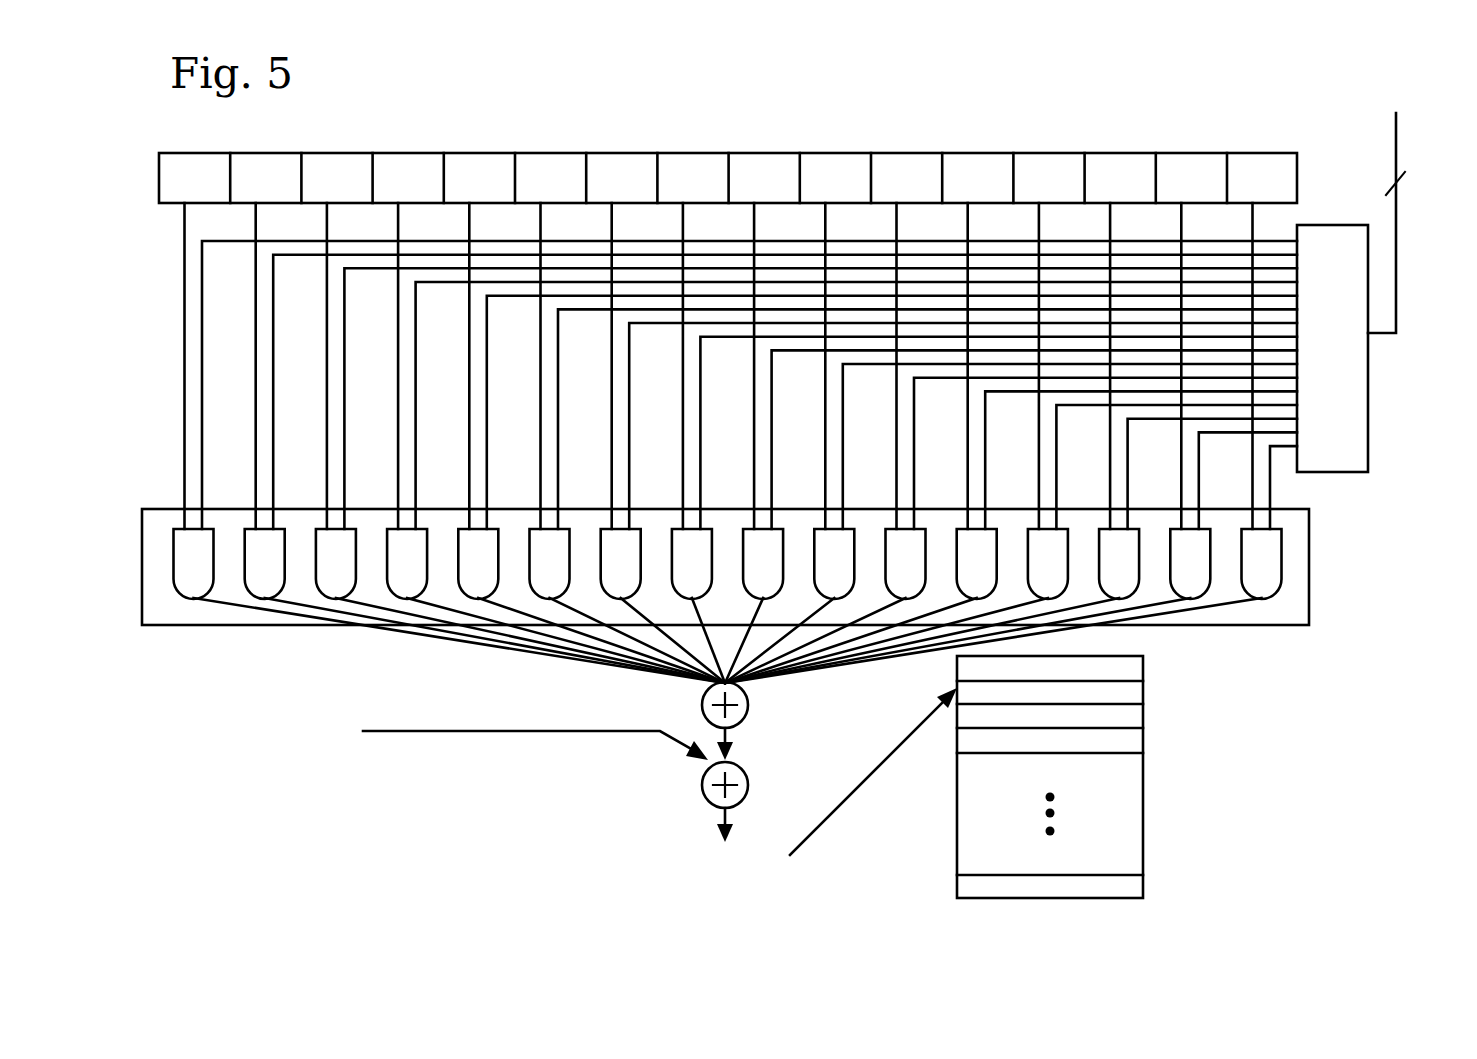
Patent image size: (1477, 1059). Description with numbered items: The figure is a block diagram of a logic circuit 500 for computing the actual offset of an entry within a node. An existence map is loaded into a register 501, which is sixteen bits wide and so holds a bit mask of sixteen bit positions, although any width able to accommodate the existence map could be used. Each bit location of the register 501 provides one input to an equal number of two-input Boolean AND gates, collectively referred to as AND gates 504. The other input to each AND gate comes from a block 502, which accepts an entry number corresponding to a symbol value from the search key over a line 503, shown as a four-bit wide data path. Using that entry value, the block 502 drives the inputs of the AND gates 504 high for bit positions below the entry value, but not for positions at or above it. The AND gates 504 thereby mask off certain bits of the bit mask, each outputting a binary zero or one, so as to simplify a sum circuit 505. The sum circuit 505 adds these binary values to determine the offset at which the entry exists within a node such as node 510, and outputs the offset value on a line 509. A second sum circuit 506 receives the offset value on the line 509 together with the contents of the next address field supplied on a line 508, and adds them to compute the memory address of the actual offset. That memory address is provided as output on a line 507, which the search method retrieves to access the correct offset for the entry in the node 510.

The logic circuit 500 is at (1392, 585).
The register 501 is at (1298, 175).
The block 502 is at (1332, 348).
The line 503 is at (1397, 233).
The AND gates 504 is at (1310, 570).
The sum circuit 505 is at (749, 706).
The sum circuit 506 is at (703, 785).
The line 507 is at (715, 812).
The line 508 is at (455, 731).
The line 509 is at (730, 735).
The node 510 is at (1182, 664).